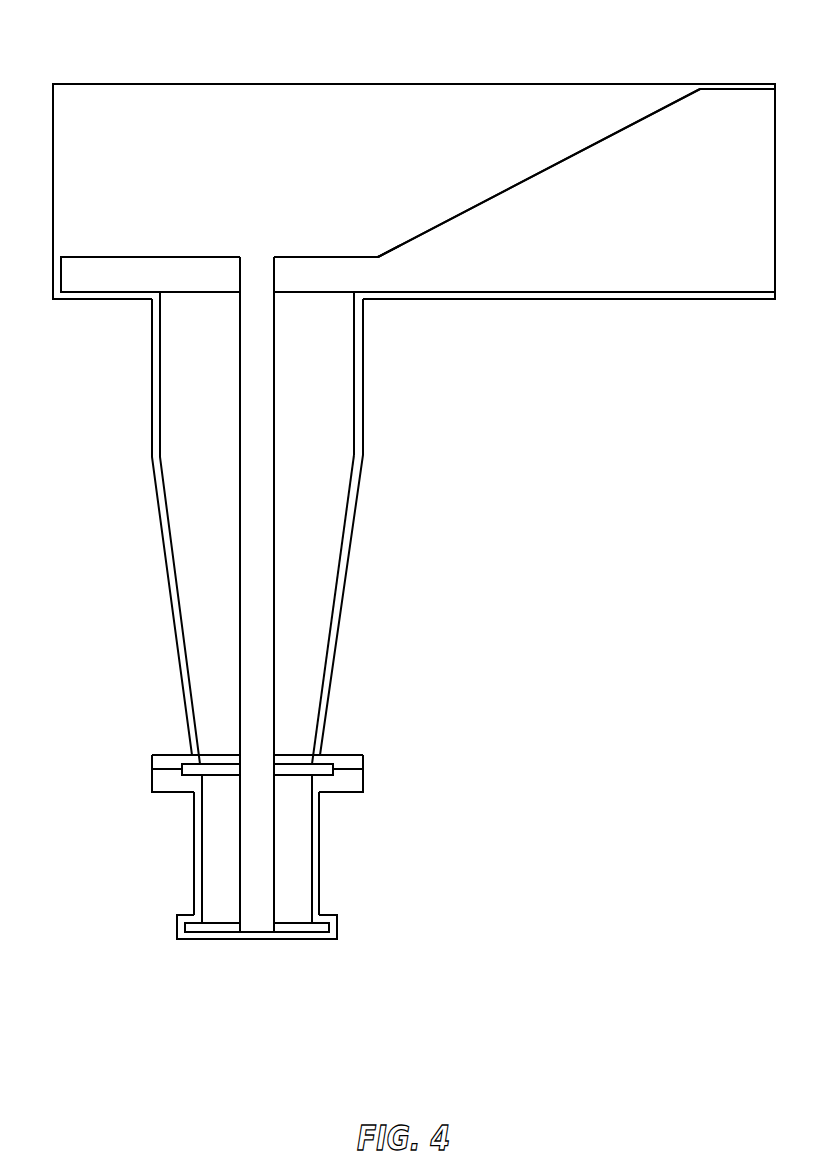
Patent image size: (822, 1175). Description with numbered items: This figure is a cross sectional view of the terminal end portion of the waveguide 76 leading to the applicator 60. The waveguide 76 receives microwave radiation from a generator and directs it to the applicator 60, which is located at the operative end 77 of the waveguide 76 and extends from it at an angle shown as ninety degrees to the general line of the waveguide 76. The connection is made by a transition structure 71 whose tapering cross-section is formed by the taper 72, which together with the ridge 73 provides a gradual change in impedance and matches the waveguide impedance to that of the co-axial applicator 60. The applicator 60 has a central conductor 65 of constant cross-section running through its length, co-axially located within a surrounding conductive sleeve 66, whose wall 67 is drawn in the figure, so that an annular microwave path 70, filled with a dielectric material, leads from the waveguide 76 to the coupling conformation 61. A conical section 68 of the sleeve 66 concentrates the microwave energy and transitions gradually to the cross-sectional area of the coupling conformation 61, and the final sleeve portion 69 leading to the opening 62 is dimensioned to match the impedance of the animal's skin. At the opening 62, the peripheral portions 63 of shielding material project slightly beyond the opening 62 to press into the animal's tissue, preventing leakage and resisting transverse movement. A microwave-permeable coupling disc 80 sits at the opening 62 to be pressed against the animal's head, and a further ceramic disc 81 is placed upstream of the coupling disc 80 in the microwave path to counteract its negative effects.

The applicator 60 is at (447, 681).
The coupling conformation 61 is at (292, 952).
The opening 62 is at (224, 943).
The peripheral portions 63 is at (348, 932).
The central conductor 65 is at (255, 496).
The conductive sleeve 66 is at (370, 389).
The tube wall 67 is at (363, 422).
The conical section 68 is at (345, 578).
The sleeve portion 69 is at (320, 856).
The annular microwave path 70 is at (203, 391).
The transition structure 71 is at (606, 224).
The taper 72 is at (497, 193).
The ridge 73 is at (378, 257).
The waveguide 76 is at (745, 200).
The operative end 77 is at (758, 78).
The coupling disc 80 is at (290, 927).
The further ceramic disc 81 is at (228, 766).